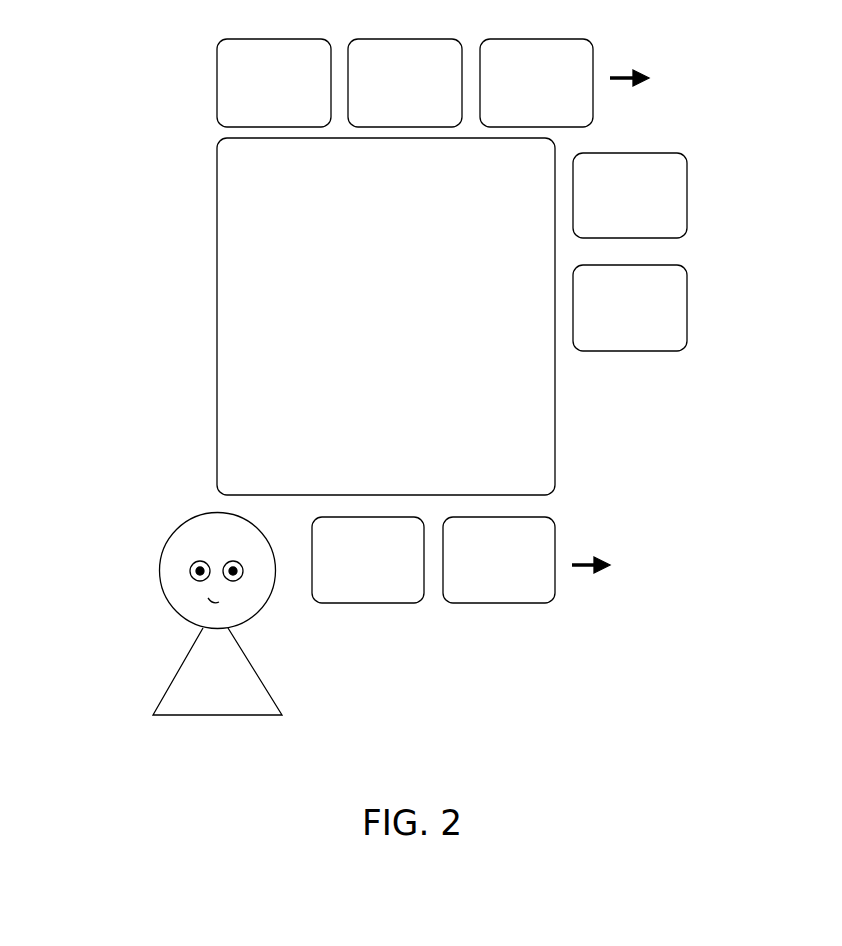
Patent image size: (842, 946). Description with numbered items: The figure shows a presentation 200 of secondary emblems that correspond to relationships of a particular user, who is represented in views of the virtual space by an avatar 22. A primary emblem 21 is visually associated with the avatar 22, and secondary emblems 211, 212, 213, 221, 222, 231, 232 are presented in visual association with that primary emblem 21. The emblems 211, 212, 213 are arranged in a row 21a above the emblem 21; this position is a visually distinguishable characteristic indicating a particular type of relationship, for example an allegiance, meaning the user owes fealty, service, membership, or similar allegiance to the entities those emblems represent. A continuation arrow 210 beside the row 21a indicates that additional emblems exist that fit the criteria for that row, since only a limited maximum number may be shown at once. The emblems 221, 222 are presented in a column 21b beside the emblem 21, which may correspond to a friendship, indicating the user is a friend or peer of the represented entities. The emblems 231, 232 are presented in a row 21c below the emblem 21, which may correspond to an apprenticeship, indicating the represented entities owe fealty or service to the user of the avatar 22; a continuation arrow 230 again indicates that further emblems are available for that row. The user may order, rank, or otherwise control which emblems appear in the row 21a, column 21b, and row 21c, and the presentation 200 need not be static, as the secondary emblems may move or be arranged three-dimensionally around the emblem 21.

The presentation 200 is at (192, 757).
The emblem 21 is at (386, 316).
The row 21a is at (200, 85).
The column 21b is at (624, 378).
The row 21c is at (570, 535).
The continuation arrow 210 is at (625, 83).
The secondary emblem 211 is at (293, 39).
The secondary emblem 212 is at (425, 39).
The secondary emblem 213 is at (553, 39).
The secondary emblem 221 is at (687, 207).
The secondary emblem 222 is at (687, 300).
The continuation arrow 230 is at (587, 569).
The secondary emblem 231 is at (385, 603).
The secondary emblem 232 is at (515, 603).
The avatar 22 is at (172, 683).